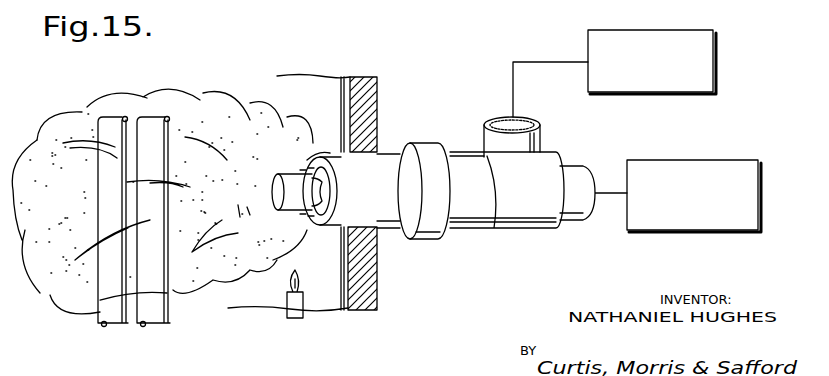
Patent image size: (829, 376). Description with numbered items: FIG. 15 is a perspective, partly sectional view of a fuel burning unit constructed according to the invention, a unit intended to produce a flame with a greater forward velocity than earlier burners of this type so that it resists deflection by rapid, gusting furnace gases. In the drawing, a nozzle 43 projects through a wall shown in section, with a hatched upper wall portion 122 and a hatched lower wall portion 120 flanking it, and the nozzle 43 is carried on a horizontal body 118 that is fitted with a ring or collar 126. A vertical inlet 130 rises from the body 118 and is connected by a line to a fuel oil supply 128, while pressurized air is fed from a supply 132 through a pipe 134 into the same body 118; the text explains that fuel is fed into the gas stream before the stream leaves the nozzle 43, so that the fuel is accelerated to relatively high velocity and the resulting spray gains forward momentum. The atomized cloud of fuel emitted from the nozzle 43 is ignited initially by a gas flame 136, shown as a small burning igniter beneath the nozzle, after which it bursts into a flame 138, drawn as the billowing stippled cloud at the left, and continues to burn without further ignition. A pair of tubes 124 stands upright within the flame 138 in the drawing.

The nozzle 43 is at (349, 204).
The burner body (tee fitting) 118 is at (481, 227).
The lower wall 120 is at (372, 240).
The upper wall 122 is at (360, 76).
The tubes 124 is at (125, 327).
The collar ring 126 is at (410, 140).
The fuel oil supply 128 is at (649, 30).
The fuel inlet 130 is at (543, 135).
The supply 132 is at (712, 150).
The pipe 134 is at (570, 222).
The gas flame 136 is at (281, 308).
The flame 138 is at (213, 99).